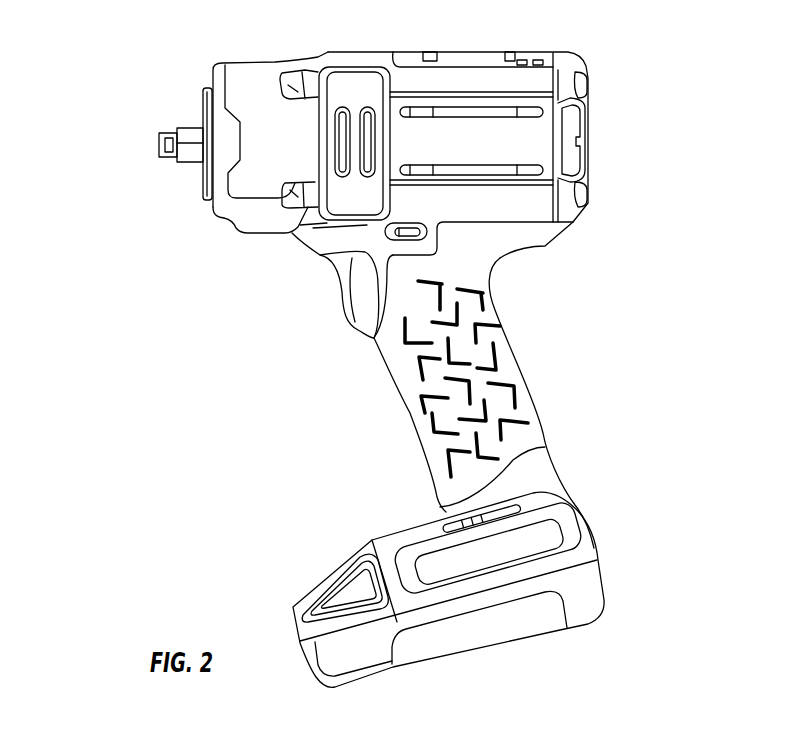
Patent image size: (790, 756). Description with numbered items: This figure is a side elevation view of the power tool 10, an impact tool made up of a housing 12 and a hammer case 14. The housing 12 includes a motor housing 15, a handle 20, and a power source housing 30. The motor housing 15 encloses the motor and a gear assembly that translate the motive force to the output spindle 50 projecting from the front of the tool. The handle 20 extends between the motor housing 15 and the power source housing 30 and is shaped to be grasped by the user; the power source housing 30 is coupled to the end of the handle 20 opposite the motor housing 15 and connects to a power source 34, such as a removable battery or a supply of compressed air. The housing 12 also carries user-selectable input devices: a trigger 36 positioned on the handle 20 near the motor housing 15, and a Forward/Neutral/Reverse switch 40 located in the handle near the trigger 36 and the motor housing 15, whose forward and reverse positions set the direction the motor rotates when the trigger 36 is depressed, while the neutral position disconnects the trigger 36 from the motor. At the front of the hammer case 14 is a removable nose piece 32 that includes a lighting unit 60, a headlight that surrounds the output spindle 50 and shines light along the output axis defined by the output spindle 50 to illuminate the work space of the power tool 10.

The power tool 10 is at (70, 50).
The housing 12 is at (614, 70).
The hammer case 14 is at (266, 70).
The motor housing 15 is at (546, 247).
The handle 20 is at (522, 383).
The power source housing 30 is at (592, 518).
The nose piece 32 is at (228, 225).
The power source 34 is at (305, 672).
The trigger 36 is at (332, 302).
The Forward/Neutral/Reverse switch 40 is at (383, 232).
The output spindle 50 is at (190, 130).
The lighting unit 60 is at (160, 143).